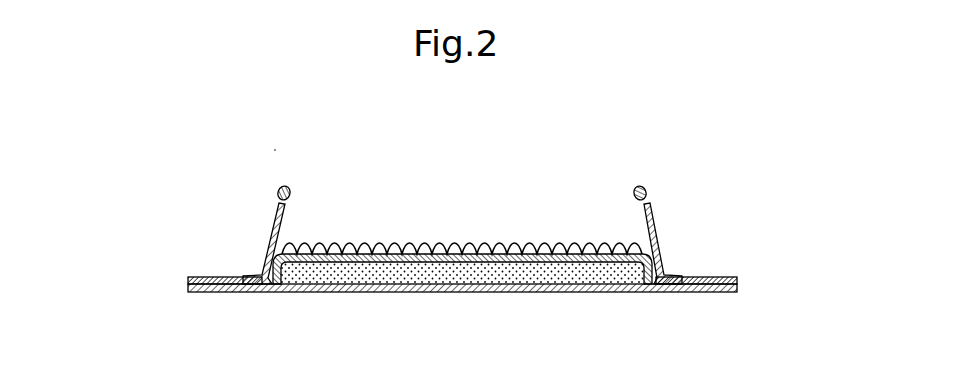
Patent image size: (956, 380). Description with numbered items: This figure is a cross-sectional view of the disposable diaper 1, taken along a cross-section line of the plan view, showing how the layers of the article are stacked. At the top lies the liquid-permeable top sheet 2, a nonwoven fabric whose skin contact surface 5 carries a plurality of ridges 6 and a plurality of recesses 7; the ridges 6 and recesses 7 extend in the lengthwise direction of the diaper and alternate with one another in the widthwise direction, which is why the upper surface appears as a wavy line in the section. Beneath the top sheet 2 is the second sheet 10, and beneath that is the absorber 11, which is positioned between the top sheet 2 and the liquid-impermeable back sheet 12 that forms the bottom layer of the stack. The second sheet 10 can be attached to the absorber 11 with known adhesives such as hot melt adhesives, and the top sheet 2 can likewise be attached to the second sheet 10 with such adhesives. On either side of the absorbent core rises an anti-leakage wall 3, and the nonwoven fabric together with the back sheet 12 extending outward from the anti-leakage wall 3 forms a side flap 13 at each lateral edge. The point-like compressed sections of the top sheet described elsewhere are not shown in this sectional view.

The disposable diaper 1 is at (258, 140).
The top sheet 2 is at (478, 245).
The anti-leakage wall 3 is at (650, 196).
The skin contact surface 5 is at (343, 222).
The ridges 6 is at (378, 238).
The recesses 7 is at (414, 242).
The second sheet 10 is at (521, 262).
The absorber 11 is at (520, 275).
The back sheet 12 is at (606, 292).
The side flap 13 is at (720, 277).